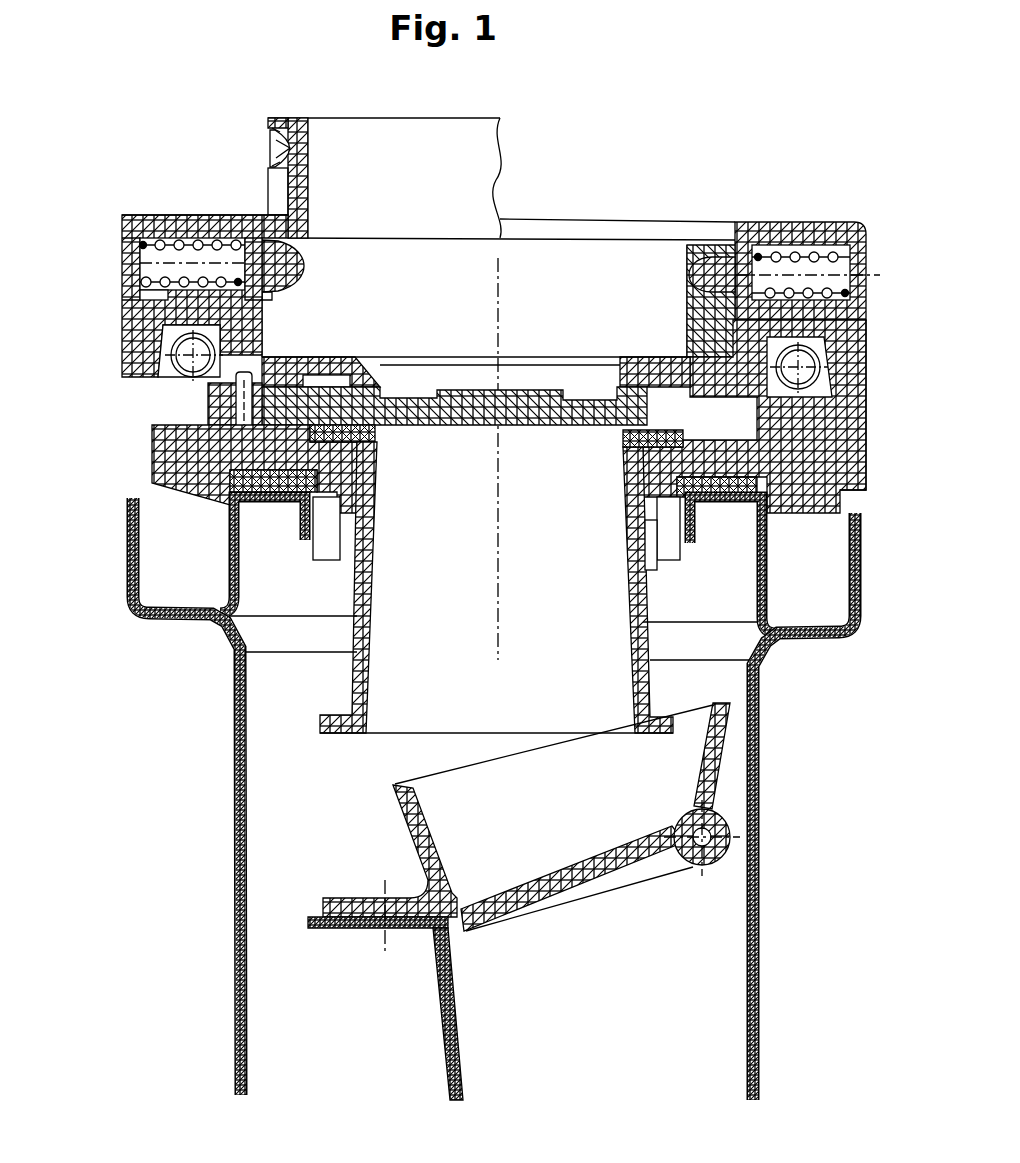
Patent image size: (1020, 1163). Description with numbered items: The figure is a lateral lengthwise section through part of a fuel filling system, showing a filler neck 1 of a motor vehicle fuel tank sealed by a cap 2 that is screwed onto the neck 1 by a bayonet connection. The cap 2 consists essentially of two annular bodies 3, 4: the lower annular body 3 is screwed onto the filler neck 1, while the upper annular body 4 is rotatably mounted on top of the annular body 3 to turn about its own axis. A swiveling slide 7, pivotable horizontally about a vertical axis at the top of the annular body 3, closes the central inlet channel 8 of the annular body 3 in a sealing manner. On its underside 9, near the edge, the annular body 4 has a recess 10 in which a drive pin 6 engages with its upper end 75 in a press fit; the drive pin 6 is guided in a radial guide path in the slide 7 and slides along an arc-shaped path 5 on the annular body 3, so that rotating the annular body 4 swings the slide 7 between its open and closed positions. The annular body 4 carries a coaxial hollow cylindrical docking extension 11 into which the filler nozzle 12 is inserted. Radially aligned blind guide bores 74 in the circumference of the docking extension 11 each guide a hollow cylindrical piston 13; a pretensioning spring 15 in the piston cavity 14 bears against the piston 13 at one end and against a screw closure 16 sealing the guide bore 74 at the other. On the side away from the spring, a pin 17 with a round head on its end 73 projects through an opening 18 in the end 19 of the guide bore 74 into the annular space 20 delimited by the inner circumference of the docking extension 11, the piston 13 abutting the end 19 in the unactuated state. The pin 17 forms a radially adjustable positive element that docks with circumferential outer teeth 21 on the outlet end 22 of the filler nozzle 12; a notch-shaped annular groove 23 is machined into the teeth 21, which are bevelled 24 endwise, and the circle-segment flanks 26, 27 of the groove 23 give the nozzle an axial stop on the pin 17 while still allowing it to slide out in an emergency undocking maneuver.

The filler neck 1 is at (236, 932).
The cap 2 is at (108, 418).
The annular body 3 is at (820, 480).
The annular body 4 is at (864, 455).
The path 5 is at (152, 462).
The drive pin 6 is at (236, 431).
The swiveling slide 7 is at (357, 410).
The central inlet channel 8 is at (450, 533).
The underside 9 is at (707, 510).
The recess 10 is at (240, 374).
The docking extension 11 is at (810, 235).
The filler nozzle 12 is at (293, 79).
The piston 13 is at (165, 232).
The piston cavity 14 is at (140, 270).
The pretensioning spring 15 is at (124, 240).
The screw closure 16 is at (136, 247).
The pin 17 is at (292, 276).
The opening 18 is at (266, 296).
The end 19 is at (228, 218).
The annular space 20 is at (392, 310).
The outer teeth 21 is at (284, 117).
The outlet end 22 is at (308, 212).
The annular groove 23 is at (270, 146).
The bevel 24 is at (286, 262).
The flank 26 is at (272, 130).
The flank 27 is at (272, 161).
The round head end 73 is at (692, 278).
The guide bore 74 is at (134, 297).
The upper end 75 is at (128, 355).